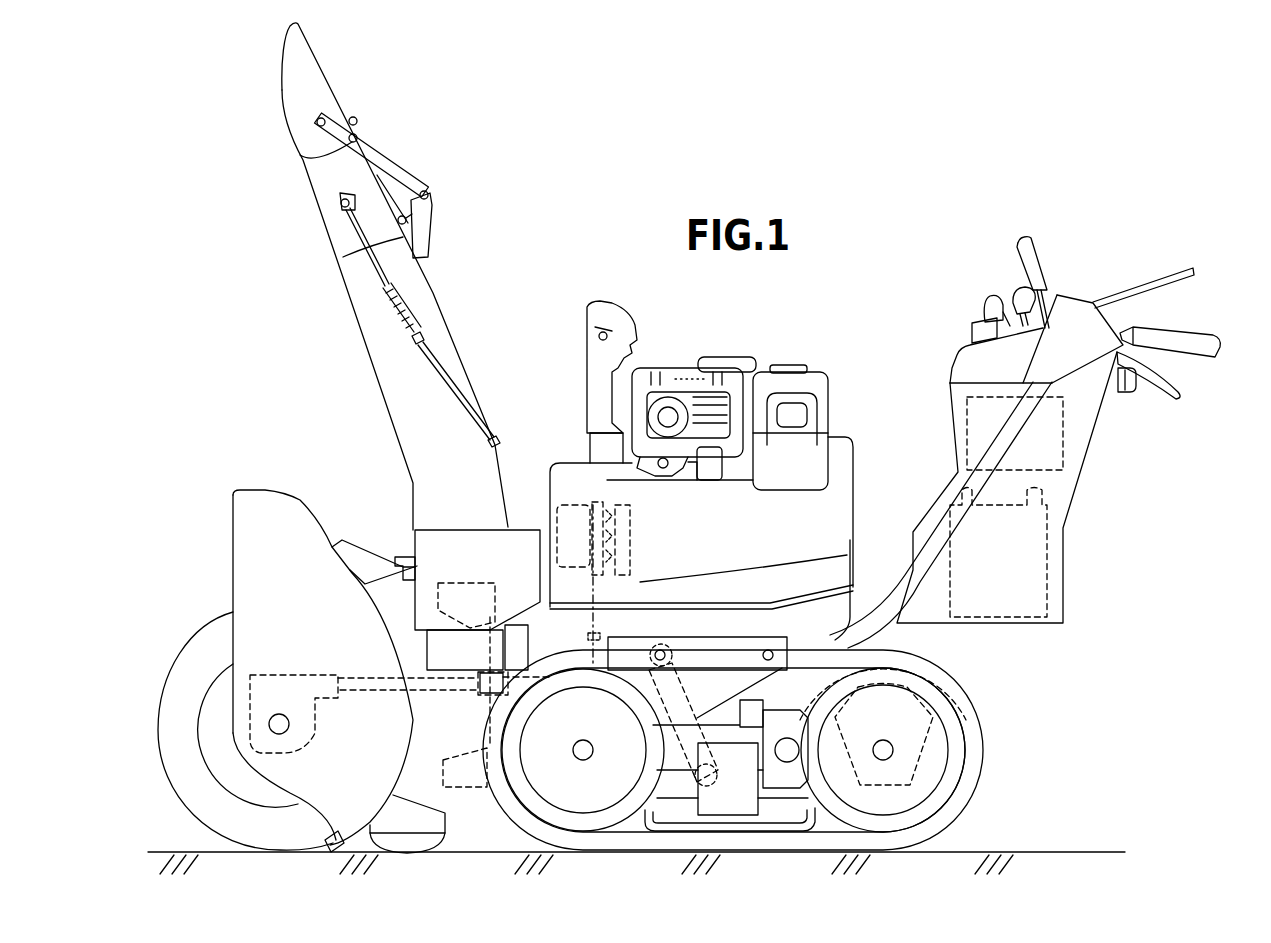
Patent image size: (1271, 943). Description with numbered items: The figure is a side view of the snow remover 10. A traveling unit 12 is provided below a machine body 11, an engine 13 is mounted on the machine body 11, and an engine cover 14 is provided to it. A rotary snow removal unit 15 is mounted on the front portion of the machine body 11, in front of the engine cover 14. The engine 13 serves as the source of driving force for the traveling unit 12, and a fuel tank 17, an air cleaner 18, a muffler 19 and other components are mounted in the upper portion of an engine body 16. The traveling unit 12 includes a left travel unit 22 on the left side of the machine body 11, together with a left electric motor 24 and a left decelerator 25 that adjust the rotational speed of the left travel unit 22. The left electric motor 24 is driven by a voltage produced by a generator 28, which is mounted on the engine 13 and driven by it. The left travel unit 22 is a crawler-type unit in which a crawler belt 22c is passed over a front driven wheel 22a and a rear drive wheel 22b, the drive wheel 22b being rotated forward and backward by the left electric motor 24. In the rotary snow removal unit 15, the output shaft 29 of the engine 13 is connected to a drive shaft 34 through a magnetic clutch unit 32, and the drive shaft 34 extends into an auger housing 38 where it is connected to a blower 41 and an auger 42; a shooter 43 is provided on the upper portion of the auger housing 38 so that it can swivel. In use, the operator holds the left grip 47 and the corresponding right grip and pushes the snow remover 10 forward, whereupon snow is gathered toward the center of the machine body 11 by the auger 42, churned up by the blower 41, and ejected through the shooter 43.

The snow remover 10 is at (165, 240).
The machine body 11 is at (748, 636).
The traveling unit 12 is at (980, 778).
The engine 13 is at (657, 352).
The engine cover 14 is at (843, 480).
The rotary snow removal unit 15 is at (213, 530).
The engine body 16 is at (583, 470).
The fuel tank 17 is at (747, 374).
The air cleaner 18 is at (813, 372).
The muffler 19 is at (680, 376).
The left travel unit 22 is at (983, 732).
The front driven wheel 22a is at (583, 805).
The rear drive wheel 22b is at (890, 808).
The crawler belt 22c is at (757, 845).
The left electric motor 24 is at (930, 693).
The left decelerator 25 is at (910, 778).
The generator 28 is at (630, 437).
The output shaft 29 is at (630, 540).
The magnetic clutch unit 32 is at (562, 520).
The drive shaft 34 is at (440, 690).
The auger housing 38 is at (260, 502).
The blower 41 is at (463, 597).
The auger 42 is at (180, 680).
The shooter 43 is at (343, 253).
The left grip 47 is at (1170, 340).